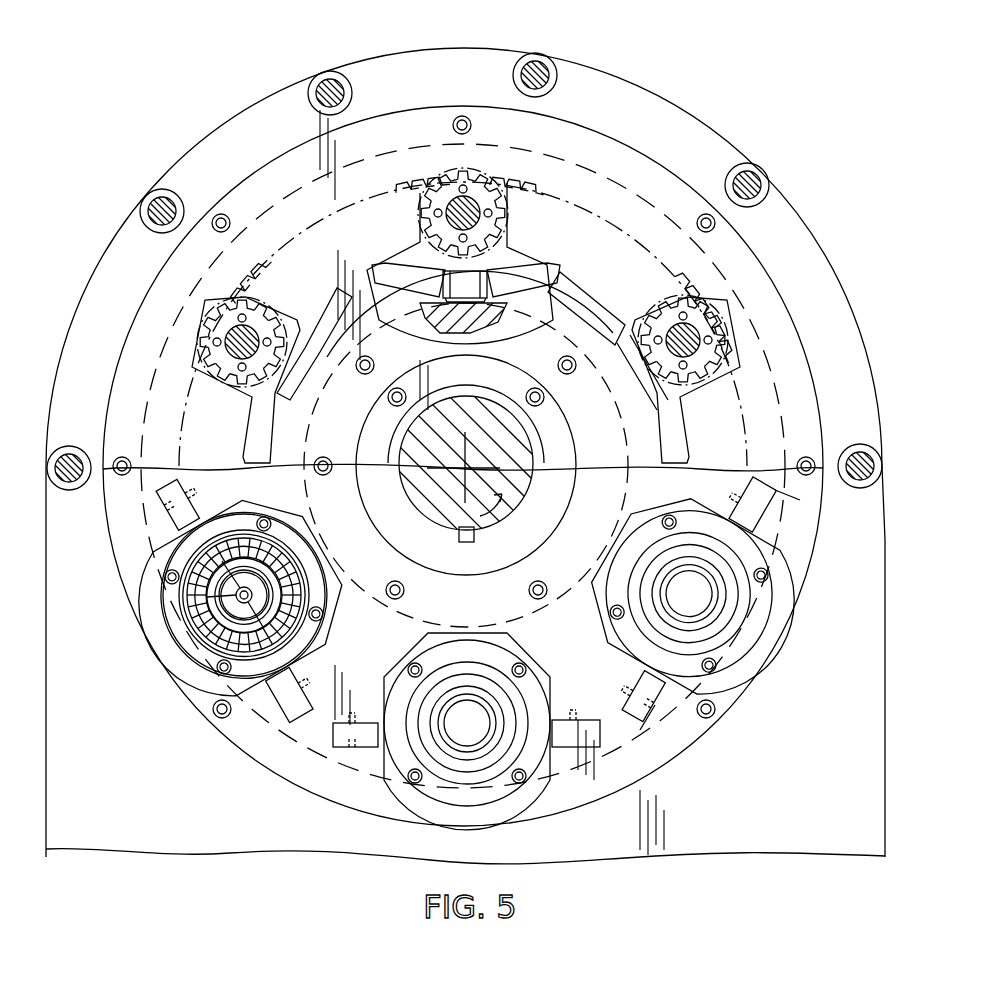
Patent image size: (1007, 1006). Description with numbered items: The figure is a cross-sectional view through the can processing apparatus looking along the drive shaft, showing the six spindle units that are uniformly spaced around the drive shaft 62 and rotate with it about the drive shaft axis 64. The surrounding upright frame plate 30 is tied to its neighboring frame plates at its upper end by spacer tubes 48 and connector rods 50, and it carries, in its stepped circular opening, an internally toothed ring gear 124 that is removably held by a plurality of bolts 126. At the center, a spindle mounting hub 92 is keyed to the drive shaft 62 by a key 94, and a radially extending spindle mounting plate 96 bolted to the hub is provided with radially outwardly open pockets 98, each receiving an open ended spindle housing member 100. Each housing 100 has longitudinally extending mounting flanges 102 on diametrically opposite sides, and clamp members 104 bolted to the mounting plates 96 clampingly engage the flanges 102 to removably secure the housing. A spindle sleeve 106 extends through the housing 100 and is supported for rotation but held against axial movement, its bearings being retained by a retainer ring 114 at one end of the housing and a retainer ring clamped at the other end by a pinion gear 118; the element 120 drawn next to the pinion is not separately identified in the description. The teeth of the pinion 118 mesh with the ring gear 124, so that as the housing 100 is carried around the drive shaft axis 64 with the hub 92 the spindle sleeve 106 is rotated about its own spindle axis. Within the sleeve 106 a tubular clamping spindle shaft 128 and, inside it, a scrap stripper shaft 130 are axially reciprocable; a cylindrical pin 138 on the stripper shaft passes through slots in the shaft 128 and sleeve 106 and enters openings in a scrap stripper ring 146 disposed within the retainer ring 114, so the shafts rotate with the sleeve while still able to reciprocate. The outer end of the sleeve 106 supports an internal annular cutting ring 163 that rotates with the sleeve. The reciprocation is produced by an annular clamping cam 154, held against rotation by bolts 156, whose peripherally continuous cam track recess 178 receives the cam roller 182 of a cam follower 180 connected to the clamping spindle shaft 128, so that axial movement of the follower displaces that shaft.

The frame plate 30 is at (720, 120).
The spacer tube 48 is at (158, 205).
The connector rod 50 is at (140, 207).
The drive shaft 62 is at (405, 484).
The drive shaft axis 64 is at (420, 512).
The spindle mounting hub 92 is at (560, 604).
The key 94 is at (462, 545).
The spindle mounting plate 96 is at (300, 750).
The pocket 98 is at (410, 657).
The spindle housing member 100 is at (410, 808).
The mounting flange 102 is at (760, 523).
The clamp member 104 is at (775, 492).
The spindle sleeve 106 is at (245, 618).
The retainer ring 114 is at (215, 590).
The pinion gear 118 is at (445, 222).
The bracket plate 120 is at (420, 245).
The ring gear 124 is at (262, 178).
The bolt 126 is at (462, 116).
The tubular clamping spindle shaft 128 is at (440, 208).
The scrap stripper shaft 130 is at (455, 230).
The cylindrical pin 138 is at (195, 575).
The scrap stripper ring 146 is at (228, 650).
The clamping cam 154 is at (575, 300).
The bolt 156 is at (574, 358).
The cutting ring 163 is at (250, 628).
The cam track recess 178 is at (536, 292).
The cam follower 180 is at (520, 228).
The cam roller 182 is at (515, 282).